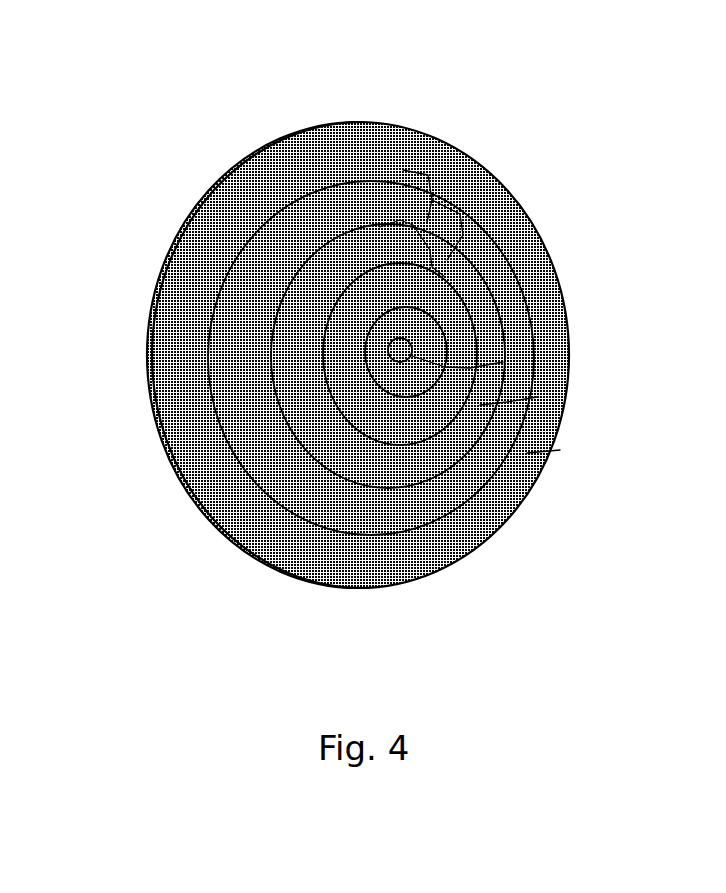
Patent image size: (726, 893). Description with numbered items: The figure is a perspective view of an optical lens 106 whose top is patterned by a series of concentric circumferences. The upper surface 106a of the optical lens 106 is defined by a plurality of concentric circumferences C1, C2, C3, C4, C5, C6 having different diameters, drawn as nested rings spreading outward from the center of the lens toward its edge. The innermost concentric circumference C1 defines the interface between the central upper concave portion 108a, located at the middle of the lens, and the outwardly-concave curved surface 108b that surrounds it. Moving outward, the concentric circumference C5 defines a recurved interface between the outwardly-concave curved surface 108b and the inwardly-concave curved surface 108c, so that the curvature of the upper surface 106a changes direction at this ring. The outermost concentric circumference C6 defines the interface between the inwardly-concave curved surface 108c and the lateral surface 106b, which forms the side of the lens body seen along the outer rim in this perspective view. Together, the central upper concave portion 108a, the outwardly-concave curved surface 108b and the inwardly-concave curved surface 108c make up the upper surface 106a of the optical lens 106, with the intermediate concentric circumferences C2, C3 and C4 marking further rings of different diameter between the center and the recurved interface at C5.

The optical lens 106 is at (83, 108).
The upper surface 106a is at (380, 147).
The lateral surface 106b is at (232, 168).
The concentric circumference C1 is at (412, 345).
The concentric circumference C2 is at (447, 313).
The concentric circumference C3 is at (460, 214).
The concentric circumference C4 is at (422, 228).
The concentric circumference C5 is at (402, 185).
The concentric circumference C6 is at (530, 505).
The central upper concave portion 108a is at (503, 362).
The outwardly-concave curved surface 108b is at (537, 397).
The inwardly-concave curved surface 108c is at (557, 452).